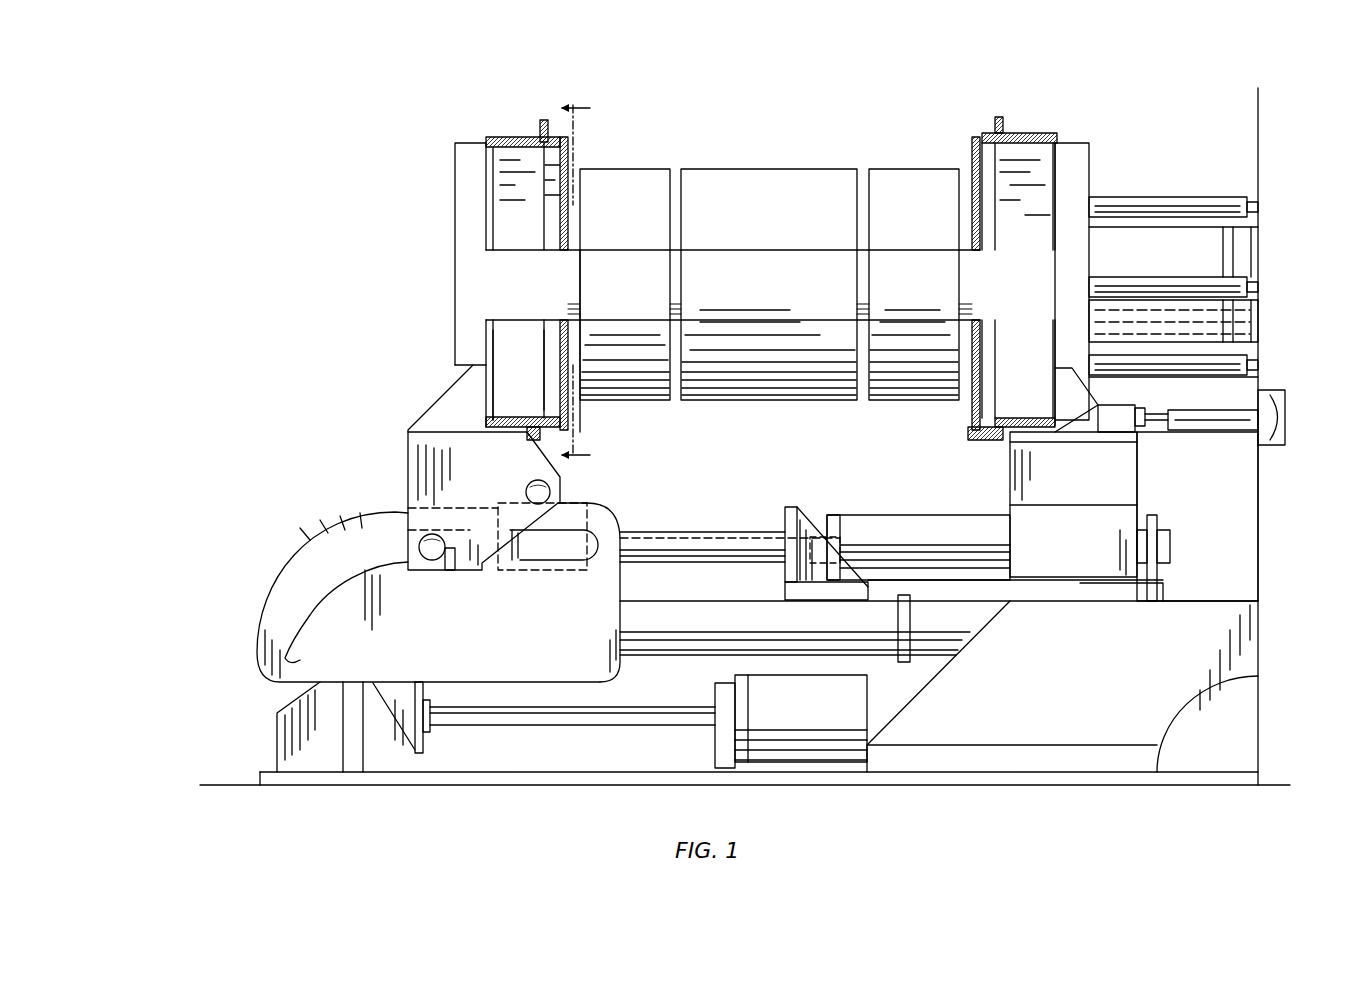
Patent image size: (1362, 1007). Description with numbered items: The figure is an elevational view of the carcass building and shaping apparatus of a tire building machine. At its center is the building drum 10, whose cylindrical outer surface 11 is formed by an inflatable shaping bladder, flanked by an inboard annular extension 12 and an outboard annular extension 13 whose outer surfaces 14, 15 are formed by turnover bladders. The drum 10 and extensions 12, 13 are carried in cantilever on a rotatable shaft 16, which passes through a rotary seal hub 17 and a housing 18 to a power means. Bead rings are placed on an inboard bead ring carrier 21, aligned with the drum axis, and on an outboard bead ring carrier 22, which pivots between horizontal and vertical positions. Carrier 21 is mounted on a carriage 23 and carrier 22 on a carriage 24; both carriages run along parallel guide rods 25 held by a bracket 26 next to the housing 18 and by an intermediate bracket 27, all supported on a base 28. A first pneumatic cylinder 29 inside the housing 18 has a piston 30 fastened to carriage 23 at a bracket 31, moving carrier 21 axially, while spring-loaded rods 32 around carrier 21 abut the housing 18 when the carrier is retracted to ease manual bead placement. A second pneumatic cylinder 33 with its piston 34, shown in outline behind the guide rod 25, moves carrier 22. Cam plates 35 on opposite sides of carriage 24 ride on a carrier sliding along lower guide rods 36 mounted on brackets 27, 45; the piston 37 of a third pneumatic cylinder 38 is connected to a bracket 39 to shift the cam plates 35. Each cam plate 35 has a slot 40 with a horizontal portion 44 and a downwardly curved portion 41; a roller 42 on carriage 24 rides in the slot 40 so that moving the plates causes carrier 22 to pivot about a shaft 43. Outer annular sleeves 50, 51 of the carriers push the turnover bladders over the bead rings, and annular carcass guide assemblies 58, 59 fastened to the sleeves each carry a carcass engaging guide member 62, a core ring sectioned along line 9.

The section line 9- 9 is at (578, 276).
The building drum 10 is at (771, 285).
The cylindrical outer surface 11 is at (746, 169).
The inboard annular extension 12 is at (923, 285).
The outboard annular extension 13 is at (637, 285).
The cylindrical outer surface 14 is at (893, 169).
The cylindrical outer surface 15 is at (633, 169).
The rotatable shaft 16 is at (666, 252).
The rotary seal hub 17 is at (1258, 262).
The housing 18 is at (1324, 198).
The inboard bead ring carrier 21 is at (1089, 165).
The outboard bead ring carrier 22 is at (455, 165).
The carriage 23 is at (1122, 462).
The carriage 24 is at (408, 465).
The guide rods 25 is at (672, 532).
The bracket 26 is at (1152, 575).
The intermediate bracket 27 is at (791, 508).
The base 28 is at (1110, 785).
The first pneumatic cylinder 29 is at (1285, 415).
The piston 30 is at (1215, 432).
The bracket 31 is at (1108, 410).
The spring-loaded rods 32 is at (1190, 197).
The second pneumatic cylinder 33 is at (912, 538).
The piston 34 is at (710, 536).
The cam plates 35 is at (283, 660).
The guide rods 36 is at (676, 658).
The piston 37 is at (545, 718).
The third pneumatic cylinder 38 is at (803, 745).
The bracket 39 is at (405, 772).
The slot 40 is at (600, 582).
The downwardly curved portion 41 is at (292, 598).
The roller 42 is at (436, 556).
The shaft 43 is at (552, 500).
The horizontal portion 44 is at (515, 565).
The bracket 45 is at (276, 735).
The outer annular sleeve 50 is at (1053, 140).
The outer annular sleeve 51 is at (500, 137).
The annular carcass guide assembly 58 is at (1006, 125).
The annular carcass guide assembly 59 is at (538, 132).
The carcass engaging guide member 62 is at (575, 131).